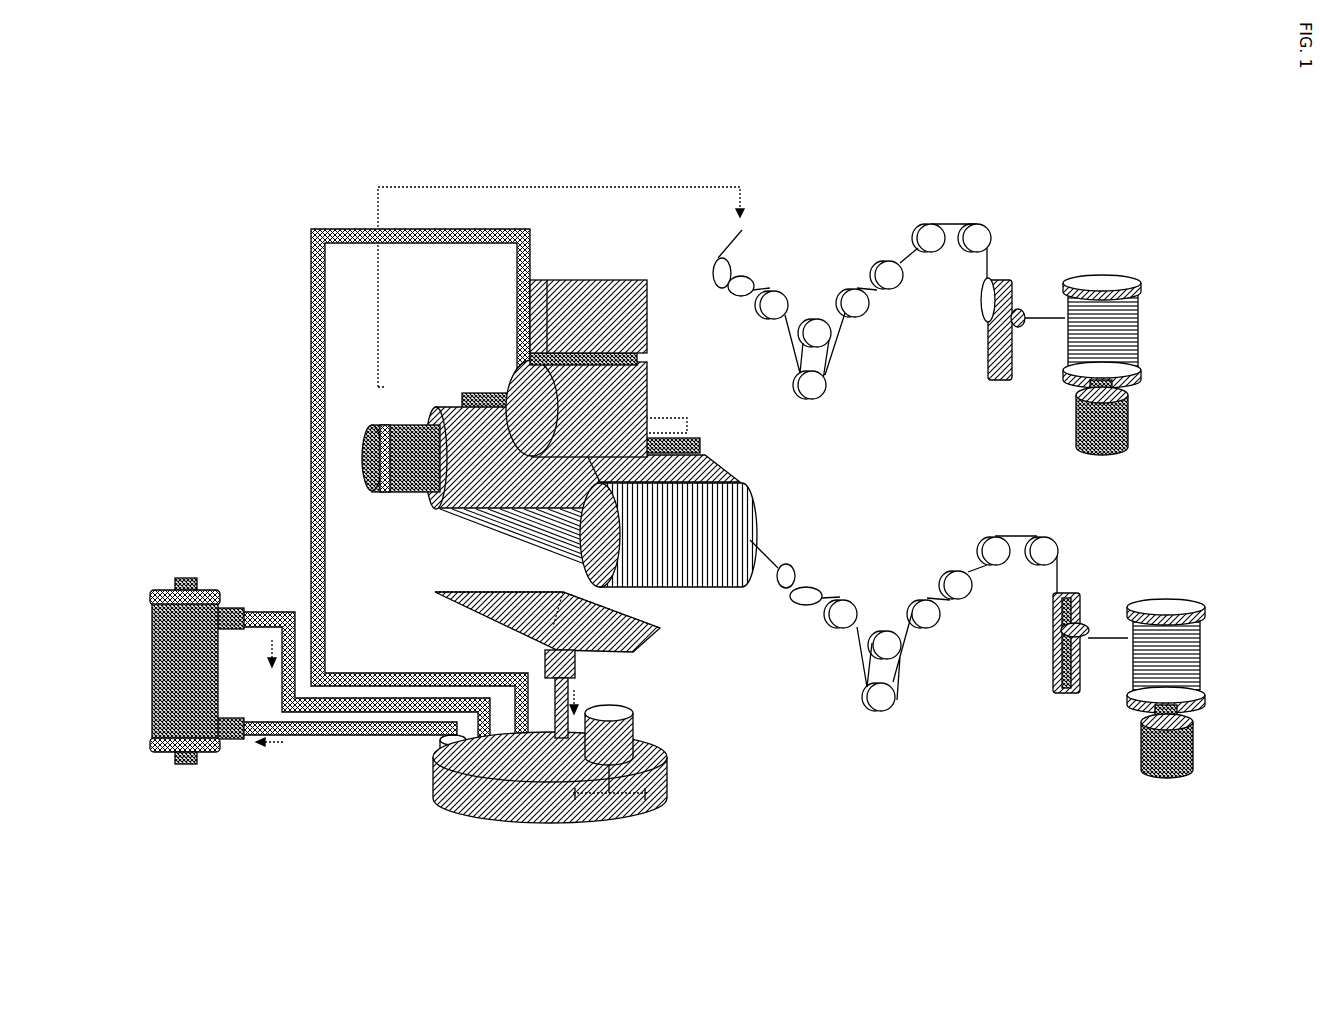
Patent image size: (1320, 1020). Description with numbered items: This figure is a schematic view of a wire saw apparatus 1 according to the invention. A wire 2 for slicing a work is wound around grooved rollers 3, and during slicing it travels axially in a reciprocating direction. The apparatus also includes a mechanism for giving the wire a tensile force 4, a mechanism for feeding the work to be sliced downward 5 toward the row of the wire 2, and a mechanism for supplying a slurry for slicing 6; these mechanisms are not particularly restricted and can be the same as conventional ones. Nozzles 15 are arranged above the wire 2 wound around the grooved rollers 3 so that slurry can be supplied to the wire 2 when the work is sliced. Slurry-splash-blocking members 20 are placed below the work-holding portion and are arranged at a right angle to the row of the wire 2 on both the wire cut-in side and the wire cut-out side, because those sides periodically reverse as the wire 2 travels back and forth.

The wire saw apparatus 1 is at (237, 252).
The wire 2 is at (757, 562).
The grooved rollers 3 is at (742, 497).
The mechanism for giving the wire a tensile force 4 is at (987, 688).
The mechanism for feeding the work to be sliced downward 5 is at (578, 307).
The mechanism for supplying a slurry for slicing 6 is at (278, 565).
The nozzles 15 is at (697, 445).
The slurry-splash-blocking members 20 is at (670, 420).